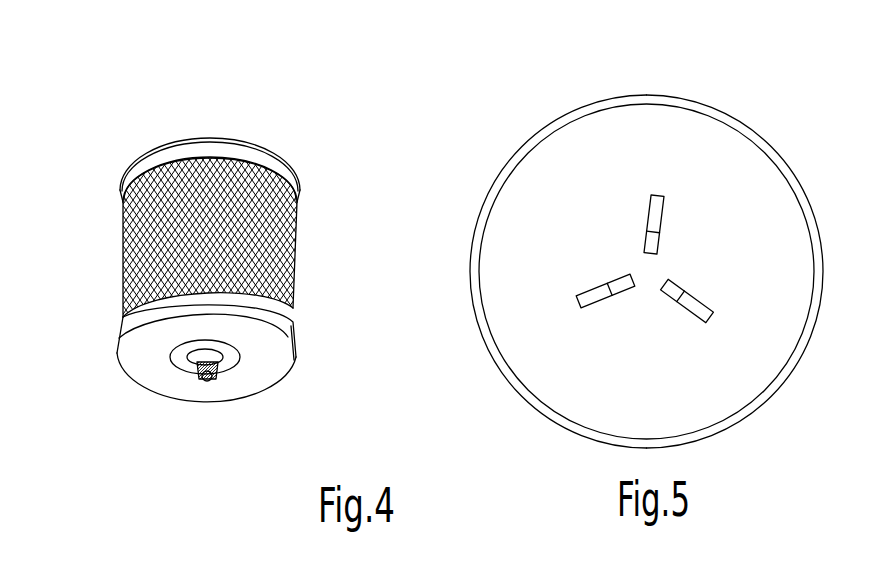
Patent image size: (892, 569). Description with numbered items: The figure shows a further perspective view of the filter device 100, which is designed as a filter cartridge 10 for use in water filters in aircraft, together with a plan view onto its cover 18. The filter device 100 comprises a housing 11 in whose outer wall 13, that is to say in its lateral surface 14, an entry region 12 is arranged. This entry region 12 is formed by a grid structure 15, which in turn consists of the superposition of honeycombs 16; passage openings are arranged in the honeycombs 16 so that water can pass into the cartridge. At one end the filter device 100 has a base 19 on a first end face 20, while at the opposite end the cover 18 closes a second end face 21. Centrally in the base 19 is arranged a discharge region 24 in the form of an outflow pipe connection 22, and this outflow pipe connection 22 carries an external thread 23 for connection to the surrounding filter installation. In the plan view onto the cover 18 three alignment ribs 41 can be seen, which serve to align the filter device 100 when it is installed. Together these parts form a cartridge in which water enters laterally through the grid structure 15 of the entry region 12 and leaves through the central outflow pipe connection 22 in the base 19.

In FIG. 4, the filter device 100 is at (229, 285).
In FIG. 5, the filter device 100 is at (600, 224).
In FIG. 4, the filter cartridge 10 is at (123, 255).
In FIG. 5, the filter cartridge 10 is at (585, 108).
In FIG. 4, the housing 11 is at (118, 308).
In FIG. 5, the housing 11 is at (530, 140).
In FIG. 4, the entry region 12 is at (298, 319).
In FIG. 4, the outer wall 13 is at (295, 278).
In FIG. 4, the lateral surface 14 is at (296, 297).
In FIG. 4, the grid structure 15 is at (295, 235).
In FIG. 4, the honeycombs 16 is at (204, 160).
In FIG. 4, the cover 18 is at (152, 147).
In FIG. 5, the cover 18 is at (690, 102).
In FIG. 4, the base 19 is at (158, 400).
In FIG. 4, the first end face 20 is at (277, 407).
In FIG. 4, the second end face 21 is at (247, 130).
In FIG. 4, the outflow pipe connection 22 is at (199, 378).
In FIG. 4, the external thread 23 is at (197, 373).
In FIG. 4, the discharge region 24 is at (226, 382).
In FIG. 5, the alignment ribs 41 is at (663, 213).